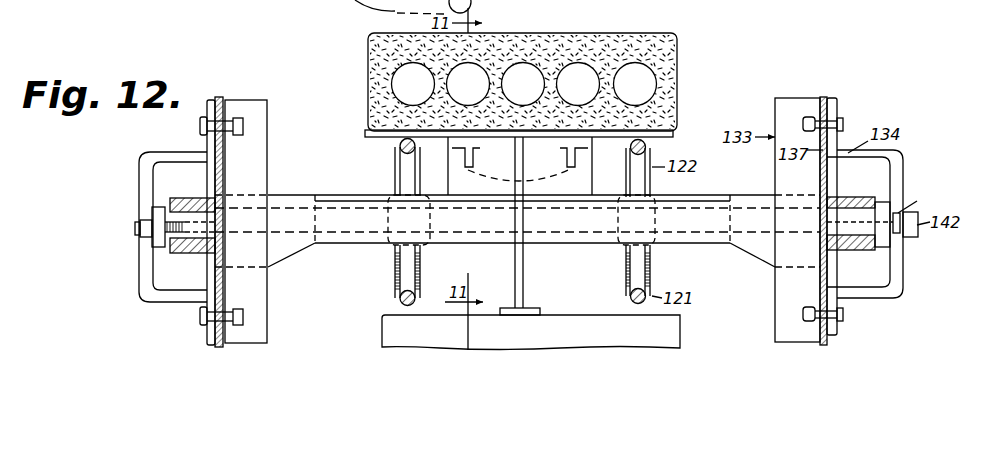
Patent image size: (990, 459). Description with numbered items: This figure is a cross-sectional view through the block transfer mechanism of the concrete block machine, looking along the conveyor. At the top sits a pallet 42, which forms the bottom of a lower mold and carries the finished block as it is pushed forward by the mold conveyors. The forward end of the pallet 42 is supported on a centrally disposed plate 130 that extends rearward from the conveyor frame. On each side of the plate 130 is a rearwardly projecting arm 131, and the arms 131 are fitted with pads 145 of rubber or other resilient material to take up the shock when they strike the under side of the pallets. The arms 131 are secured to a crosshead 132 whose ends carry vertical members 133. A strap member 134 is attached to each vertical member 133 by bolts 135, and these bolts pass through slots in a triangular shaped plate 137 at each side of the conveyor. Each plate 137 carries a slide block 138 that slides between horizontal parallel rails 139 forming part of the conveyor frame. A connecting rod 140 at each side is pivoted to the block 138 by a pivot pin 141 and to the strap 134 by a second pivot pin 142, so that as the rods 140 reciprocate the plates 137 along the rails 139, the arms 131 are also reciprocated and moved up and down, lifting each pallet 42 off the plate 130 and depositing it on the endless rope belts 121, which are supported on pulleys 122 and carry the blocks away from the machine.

The pallet 42 is at (672, 138).
The endless rope belt 121 is at (395, 292).
The pulley 122 is at (394, 191).
The plate 130 is at (525, 263).
The rearwardly projecting arm 131 is at (523, 178).
The crosshead 132 is at (700, 195).
The vertical member 133 is at (238, 168).
The strap member 134 is at (143, 183).
The bolt 135 is at (842, 123).
The triangular shaped plate 137 is at (215, 143).
The slide block 138 is at (842, 196).
The horizontal parallel rail 139 is at (200, 198).
The connecting rod 140 is at (153, 249).
The pivot pin 141 is at (135, 233).
The pivot pin 142 is at (135, 213).
The pad 145 is at (472, 152).